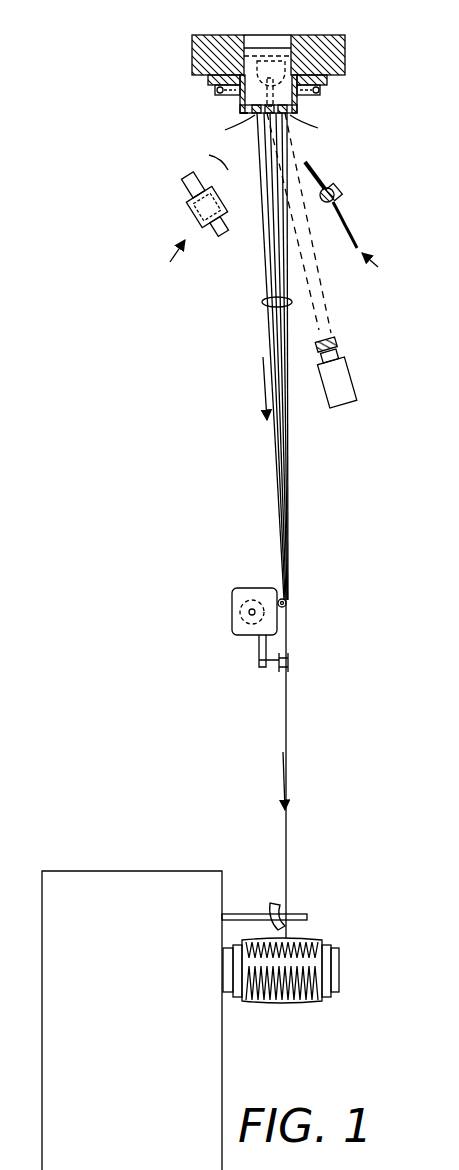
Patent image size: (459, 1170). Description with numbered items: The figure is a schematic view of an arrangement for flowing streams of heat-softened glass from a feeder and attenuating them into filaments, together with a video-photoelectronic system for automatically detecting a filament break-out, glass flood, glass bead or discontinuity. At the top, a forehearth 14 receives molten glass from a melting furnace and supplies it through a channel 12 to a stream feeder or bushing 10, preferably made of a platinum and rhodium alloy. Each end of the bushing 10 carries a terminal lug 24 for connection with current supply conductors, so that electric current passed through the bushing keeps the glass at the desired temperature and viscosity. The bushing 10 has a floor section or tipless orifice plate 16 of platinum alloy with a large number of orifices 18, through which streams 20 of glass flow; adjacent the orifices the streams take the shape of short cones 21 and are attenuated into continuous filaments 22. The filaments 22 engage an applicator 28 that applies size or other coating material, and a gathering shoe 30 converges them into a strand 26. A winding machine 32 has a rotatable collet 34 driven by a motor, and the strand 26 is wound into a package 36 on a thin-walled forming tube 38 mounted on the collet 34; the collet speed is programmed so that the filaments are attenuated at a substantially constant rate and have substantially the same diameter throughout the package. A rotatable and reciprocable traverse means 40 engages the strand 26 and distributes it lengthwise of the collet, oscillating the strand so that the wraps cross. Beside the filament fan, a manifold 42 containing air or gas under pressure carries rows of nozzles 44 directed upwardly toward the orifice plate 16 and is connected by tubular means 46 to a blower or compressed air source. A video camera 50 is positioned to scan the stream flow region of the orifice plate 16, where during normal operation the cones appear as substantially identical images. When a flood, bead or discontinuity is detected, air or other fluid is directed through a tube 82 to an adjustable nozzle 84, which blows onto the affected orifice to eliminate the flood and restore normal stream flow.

The stream feeder or bushing 10 is at (300, 110).
The channel 12 is at (256, 62).
The forehearth 14 is at (345, 48).
The floor section or tipless orifice plate 16 is at (246, 113).
The orifices 18 is at (286, 107).
The streams of glass 20 is at (260, 113).
The short cones 21 is at (285, 112).
The filaments 22 is at (262, 302).
The terminal lug 24 is at (262, 56).
The strand 26 is at (288, 708).
The applicator 28 is at (283, 587).
The gathering shoe 30 is at (290, 662).
The winding machine 32 is at (58, 868).
The rotatable collet 34 is at (339, 960).
The package 36 is at (307, 937).
The thin-walled forming tube 38 is at (326, 944).
The traverse means 40 is at (278, 906).
The manifold 42 is at (190, 197).
The nozzles 44 is at (209, 157).
The tubular means 46 is at (188, 222).
The video camera 50 is at (352, 372).
The tube 82 is at (357, 240).
The nozzle 84 is at (320, 178).